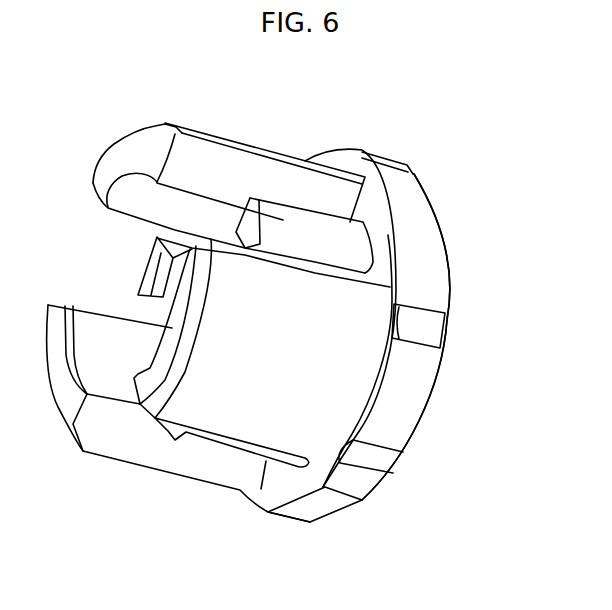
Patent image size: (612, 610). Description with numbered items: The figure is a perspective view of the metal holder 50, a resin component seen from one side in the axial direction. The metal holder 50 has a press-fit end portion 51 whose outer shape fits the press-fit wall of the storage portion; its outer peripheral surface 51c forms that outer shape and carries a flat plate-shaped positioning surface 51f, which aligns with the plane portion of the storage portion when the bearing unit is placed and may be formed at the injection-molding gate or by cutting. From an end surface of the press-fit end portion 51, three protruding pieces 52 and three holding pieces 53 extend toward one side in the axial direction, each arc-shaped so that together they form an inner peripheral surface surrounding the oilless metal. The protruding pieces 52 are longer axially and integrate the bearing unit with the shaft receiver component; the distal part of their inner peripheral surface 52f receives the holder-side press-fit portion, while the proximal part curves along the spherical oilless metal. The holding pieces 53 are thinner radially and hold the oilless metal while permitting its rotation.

The metal holder 50 is at (463, 163).
The press-fit end portion 51 is at (392, 367).
The outer peripheral surface 51c is at (420, 233).
The positioning surface 51f is at (314, 511).
The protruding piece 52 is at (257, 132).
The inner peripheral surface of protruding piece 52f is at (140, 204).
The holding piece 53 is at (287, 215).